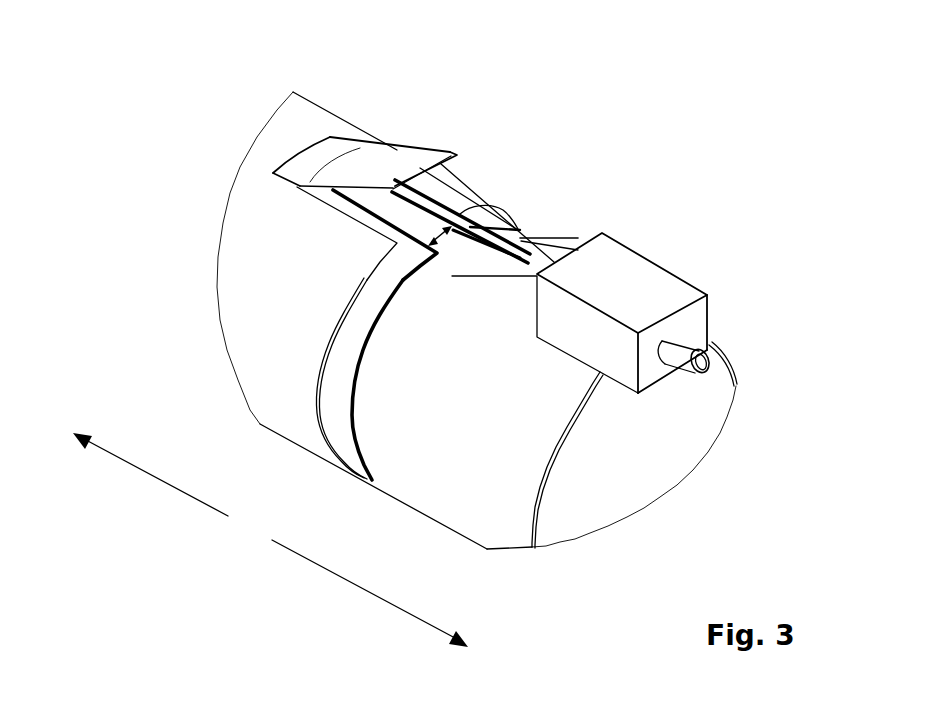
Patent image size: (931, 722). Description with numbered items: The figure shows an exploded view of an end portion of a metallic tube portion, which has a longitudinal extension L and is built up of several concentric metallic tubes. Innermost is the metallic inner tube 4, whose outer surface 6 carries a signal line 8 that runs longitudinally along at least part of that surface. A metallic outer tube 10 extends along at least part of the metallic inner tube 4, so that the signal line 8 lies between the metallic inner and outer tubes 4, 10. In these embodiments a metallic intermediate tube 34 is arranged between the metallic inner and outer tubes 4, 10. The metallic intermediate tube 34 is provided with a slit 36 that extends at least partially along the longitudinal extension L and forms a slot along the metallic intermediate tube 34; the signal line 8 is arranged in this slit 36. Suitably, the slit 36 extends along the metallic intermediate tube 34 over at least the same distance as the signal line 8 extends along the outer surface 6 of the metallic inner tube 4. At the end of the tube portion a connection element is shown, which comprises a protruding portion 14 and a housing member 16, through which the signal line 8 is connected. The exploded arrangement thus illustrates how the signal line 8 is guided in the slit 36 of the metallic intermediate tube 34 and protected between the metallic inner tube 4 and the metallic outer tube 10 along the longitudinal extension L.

The metallic inner tube 4 is at (477, 495).
The outer surface 6 is at (424, 440).
The signal line 8 is at (440, 193).
The metallic outer tube 10 is at (281, 327).
The protruding portion 14 is at (396, 150).
The housing member 16 is at (664, 284).
The metallic intermediate tube 34 is at (343, 373).
The slit 36 is at (440, 240).
The longitudinal extension L is at (270, 540).